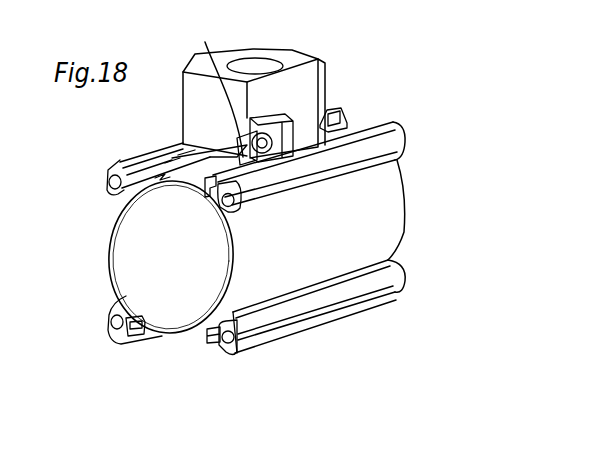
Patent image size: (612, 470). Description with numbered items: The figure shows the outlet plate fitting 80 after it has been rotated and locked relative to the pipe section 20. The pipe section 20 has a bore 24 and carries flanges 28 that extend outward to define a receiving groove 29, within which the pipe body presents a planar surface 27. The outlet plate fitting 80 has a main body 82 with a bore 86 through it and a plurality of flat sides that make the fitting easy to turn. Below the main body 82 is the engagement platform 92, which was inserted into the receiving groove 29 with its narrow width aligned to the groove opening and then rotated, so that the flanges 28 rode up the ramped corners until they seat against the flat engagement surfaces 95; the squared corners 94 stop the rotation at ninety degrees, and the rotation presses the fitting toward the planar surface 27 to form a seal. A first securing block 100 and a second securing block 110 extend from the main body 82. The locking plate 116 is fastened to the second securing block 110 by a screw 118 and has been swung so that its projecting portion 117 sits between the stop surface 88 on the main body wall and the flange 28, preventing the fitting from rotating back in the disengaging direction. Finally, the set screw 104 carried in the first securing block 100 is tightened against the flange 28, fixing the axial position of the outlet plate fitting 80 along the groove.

The pipe section 20 is at (411, 254).
The bore 24 is at (186, 322).
The planar surface 27 is at (192, 170).
The flanges 28 is at (120, 160).
The receiving groove 29 is at (122, 195).
The outlet plate fitting 80 is at (273, 83).
The main body 82 is at (320, 60).
The bore 86 is at (256, 64).
The stop surface 88 is at (213, 89).
The engagement platform 92 is at (153, 157).
The squared corners 94 is at (173, 150).
The flat engagement surfaces 95 is at (183, 143).
The first securing block 100 is at (350, 130).
The set screw 104 is at (343, 104).
The second securing block 110 is at (286, 150).
The locking plate 116 is at (268, 152).
The projecting portion 117 is at (248, 164).
The screw 118 is at (264, 152).